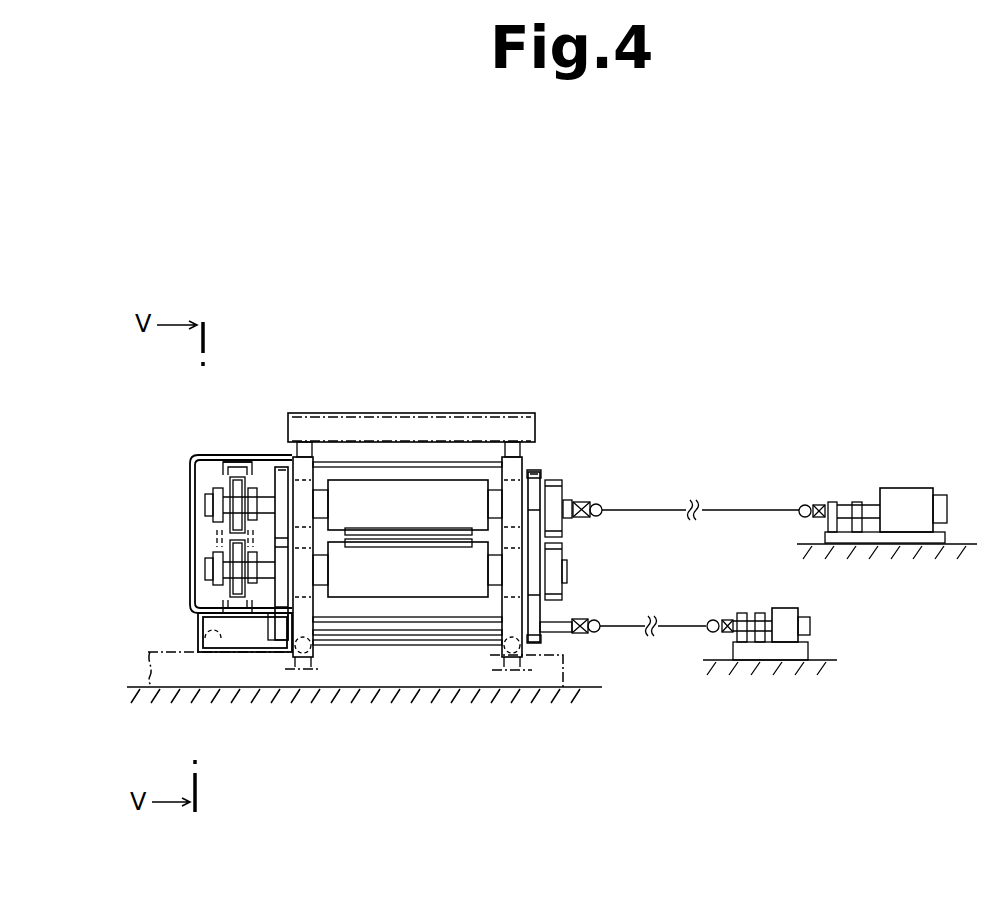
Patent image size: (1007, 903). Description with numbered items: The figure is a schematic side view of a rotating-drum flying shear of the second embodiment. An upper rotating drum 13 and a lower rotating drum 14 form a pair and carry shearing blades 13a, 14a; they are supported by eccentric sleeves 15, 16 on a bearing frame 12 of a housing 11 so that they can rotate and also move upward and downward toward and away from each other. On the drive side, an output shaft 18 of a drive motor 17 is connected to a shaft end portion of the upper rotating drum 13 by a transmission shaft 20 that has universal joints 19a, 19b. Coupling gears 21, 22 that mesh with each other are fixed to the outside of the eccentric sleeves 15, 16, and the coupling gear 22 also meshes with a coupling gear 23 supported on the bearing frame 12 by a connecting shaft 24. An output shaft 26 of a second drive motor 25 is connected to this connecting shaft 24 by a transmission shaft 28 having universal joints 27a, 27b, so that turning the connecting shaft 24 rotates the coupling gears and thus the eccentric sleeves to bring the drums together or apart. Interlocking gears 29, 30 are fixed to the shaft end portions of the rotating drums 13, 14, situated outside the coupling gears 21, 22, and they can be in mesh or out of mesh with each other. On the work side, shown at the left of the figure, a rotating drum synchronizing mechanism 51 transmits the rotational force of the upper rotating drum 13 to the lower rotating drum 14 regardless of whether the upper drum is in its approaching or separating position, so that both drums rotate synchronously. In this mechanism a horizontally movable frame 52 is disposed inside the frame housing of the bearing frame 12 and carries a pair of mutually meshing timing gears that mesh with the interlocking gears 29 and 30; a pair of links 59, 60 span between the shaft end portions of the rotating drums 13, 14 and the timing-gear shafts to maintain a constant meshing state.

The housing 11 is at (515, 412).
The bearing frame 12 is at (310, 413).
The upper rotating drum 13 is at (405, 497).
The shearing blade 13a is at (425, 530).
The lower rotating drum 14 is at (377, 575).
The shearing blade 14a is at (398, 543).
The eccentric sleeve 15 is at (307, 463).
The eccentric sleeve 16 is at (322, 600).
The drive motor 17 is at (925, 487).
The output shaft 18 is at (845, 501).
The universal joint 19a is at (583, 500).
The universal joint 19b is at (818, 505).
The transmission shaft 20 is at (655, 510).
The coupling gear 21 is at (281, 468).
The coupling gear 22 is at (280, 587).
The coupling gear 23 is at (282, 645).
The connecting shaft 24 is at (443, 623).
The drive motor 25 is at (785, 607).
The output shaft 26 is at (750, 645).
The universal joint 27a is at (580, 633).
The universal joint 27b is at (727, 620).
The transmission shaft 28 is at (688, 630).
The interlocking gear 29 is at (210, 470).
The interlocking gear 30 is at (237, 588).
The rotating drum synchronizing mechanism 51 is at (235, 463).
The horizontally movable frame 52 is at (233, 614).
The link 59 is at (207, 498).
The link 60 is at (207, 566).